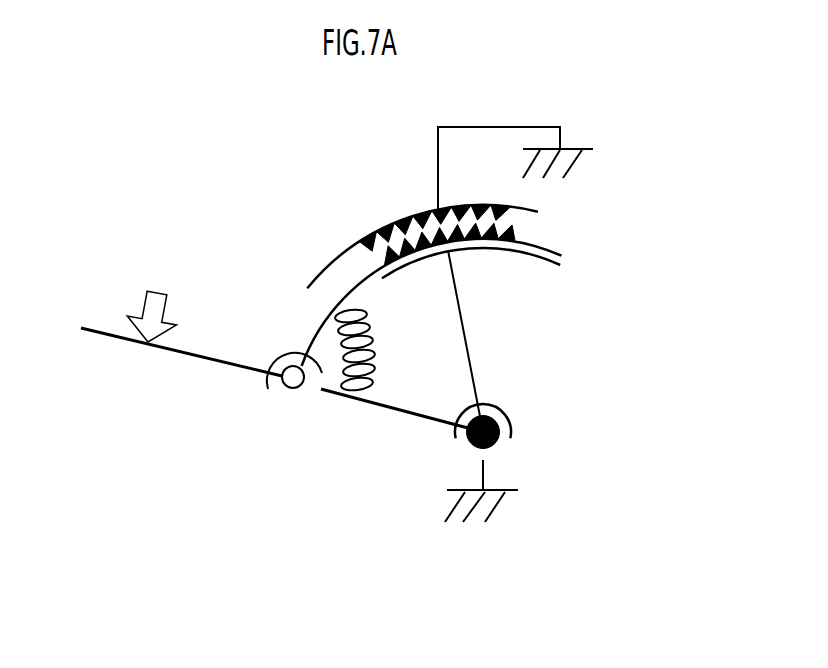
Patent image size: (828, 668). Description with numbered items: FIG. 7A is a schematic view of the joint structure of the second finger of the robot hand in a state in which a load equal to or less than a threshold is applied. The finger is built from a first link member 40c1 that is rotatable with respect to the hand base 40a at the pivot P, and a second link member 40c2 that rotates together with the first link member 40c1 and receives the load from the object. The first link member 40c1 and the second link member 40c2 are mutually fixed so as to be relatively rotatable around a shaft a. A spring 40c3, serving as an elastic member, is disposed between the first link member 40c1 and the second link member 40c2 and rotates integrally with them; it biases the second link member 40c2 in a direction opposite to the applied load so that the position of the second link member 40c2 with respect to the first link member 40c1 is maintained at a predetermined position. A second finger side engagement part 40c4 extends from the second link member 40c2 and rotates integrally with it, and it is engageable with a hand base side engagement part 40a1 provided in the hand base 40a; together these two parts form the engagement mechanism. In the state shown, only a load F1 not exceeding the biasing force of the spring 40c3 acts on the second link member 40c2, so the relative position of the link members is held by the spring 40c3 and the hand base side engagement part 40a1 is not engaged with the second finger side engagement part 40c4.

The hand base 40a is at (588, 147).
The hand base side engagement part 40a1 is at (530, 210).
The second finger side engagement part 40c4 is at (548, 250).
The spring 40c3 is at (330, 328).
The second link member 40c2 is at (100, 335).
The first link member 40c1 is at (328, 395).
The shaft a is at (292, 382).
The pivot point P is at (503, 423).
The load F1 is at (157, 292).